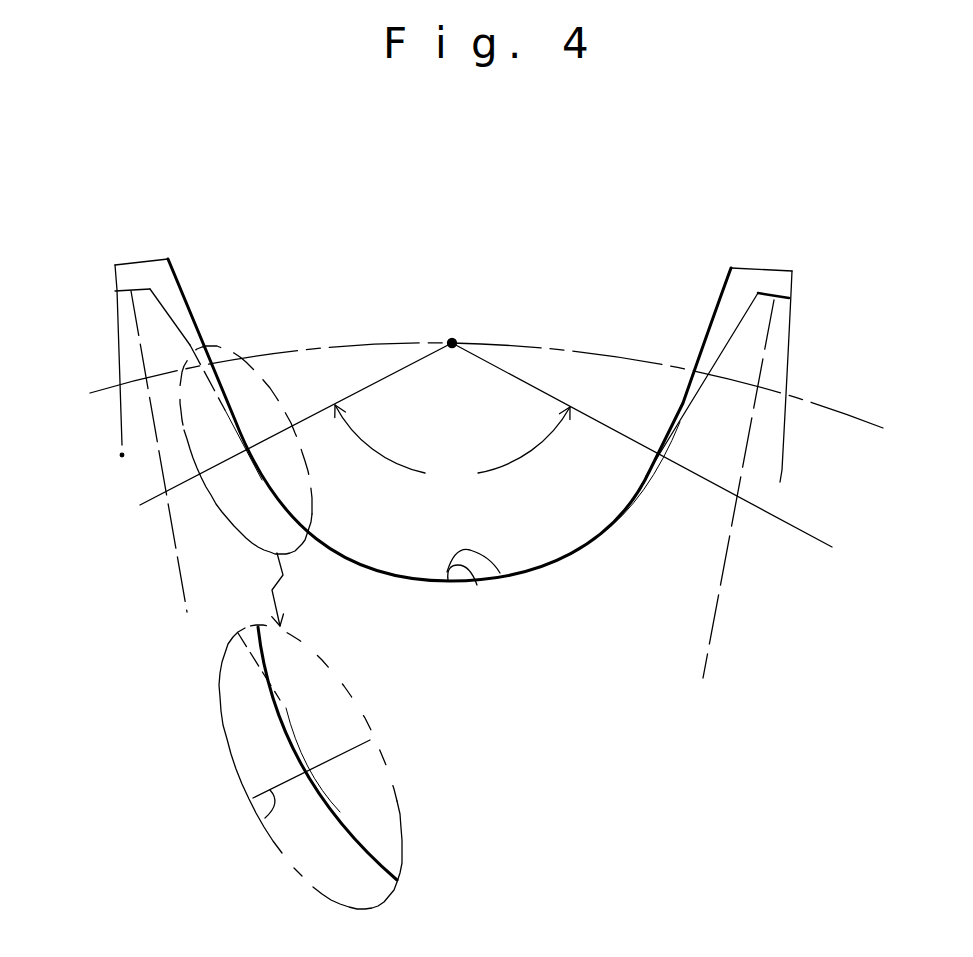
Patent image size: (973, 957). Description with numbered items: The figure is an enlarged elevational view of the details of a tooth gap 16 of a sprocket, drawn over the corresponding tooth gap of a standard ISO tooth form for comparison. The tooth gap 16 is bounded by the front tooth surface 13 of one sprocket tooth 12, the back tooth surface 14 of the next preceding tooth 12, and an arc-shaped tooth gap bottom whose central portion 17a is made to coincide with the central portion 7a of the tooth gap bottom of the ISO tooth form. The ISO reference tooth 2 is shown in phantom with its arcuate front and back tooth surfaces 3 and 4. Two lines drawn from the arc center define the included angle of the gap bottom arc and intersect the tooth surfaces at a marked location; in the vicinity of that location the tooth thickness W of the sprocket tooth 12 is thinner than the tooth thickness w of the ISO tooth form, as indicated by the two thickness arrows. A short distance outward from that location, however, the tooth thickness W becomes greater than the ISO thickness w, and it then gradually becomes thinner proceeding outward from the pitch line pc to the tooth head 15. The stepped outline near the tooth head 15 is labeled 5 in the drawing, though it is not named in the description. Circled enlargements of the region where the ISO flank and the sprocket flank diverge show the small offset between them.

The tooth of the ISO tooth form 2 is at (147, 323).
The front tooth surface of the ISO tooth form 3 is at (768, 340).
The back tooth surface of the ISO tooth form 4 is at (190, 343).
The tooth crest step 5 is at (772, 289).
The central portion of the ISO tooth gap bottom 7a is at (477, 585).
The sprocket tooth 12 is at (170, 278).
The front tooth surface 13 is at (707, 322).
The back tooth surface 14 is at (195, 307).
The tooth head 15 is at (763, 268).
The tooth gap 16 is at (460, 258).
The central portion of the tooth gap bottom 17a is at (500, 573).
The tooth thickness W is at (714, 308).
The tooth thickness of the ISO tooth form w is at (720, 347).
The pitch circle pc is at (876, 408).